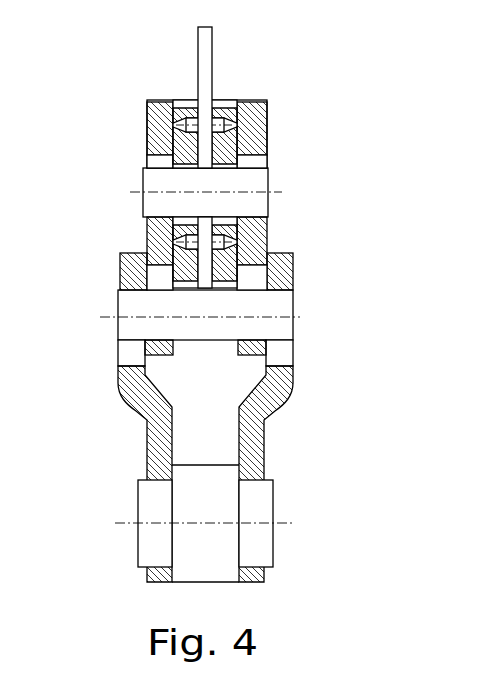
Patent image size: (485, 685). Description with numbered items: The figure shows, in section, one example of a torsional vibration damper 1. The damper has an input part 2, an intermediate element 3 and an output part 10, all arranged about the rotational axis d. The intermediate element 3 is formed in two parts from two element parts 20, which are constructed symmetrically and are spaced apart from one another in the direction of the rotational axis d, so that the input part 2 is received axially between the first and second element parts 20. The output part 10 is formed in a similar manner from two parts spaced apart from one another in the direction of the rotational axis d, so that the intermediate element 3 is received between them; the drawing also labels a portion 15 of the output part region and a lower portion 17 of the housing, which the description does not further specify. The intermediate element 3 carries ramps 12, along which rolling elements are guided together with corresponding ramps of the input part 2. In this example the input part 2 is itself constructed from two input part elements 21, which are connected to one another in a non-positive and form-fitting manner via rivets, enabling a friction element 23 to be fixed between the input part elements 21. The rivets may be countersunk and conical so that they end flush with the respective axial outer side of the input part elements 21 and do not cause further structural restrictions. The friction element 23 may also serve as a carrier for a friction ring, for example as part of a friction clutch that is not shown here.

The torsional vibration damper 1 is at (336, 210).
The input part 2 is at (280, 278).
The intermediate element 3 is at (271, 95).
The output part 10 is at (147, 433).
The ramps 12 is at (150, 165).
The support block 15 is at (280, 364).
The lower flange 17 is at (258, 494).
The element parts 20 is at (152, 110).
The input part elements 21 is at (183, 143).
The friction element 23 is at (199, 43).
The rotational axis d is at (285, 527).